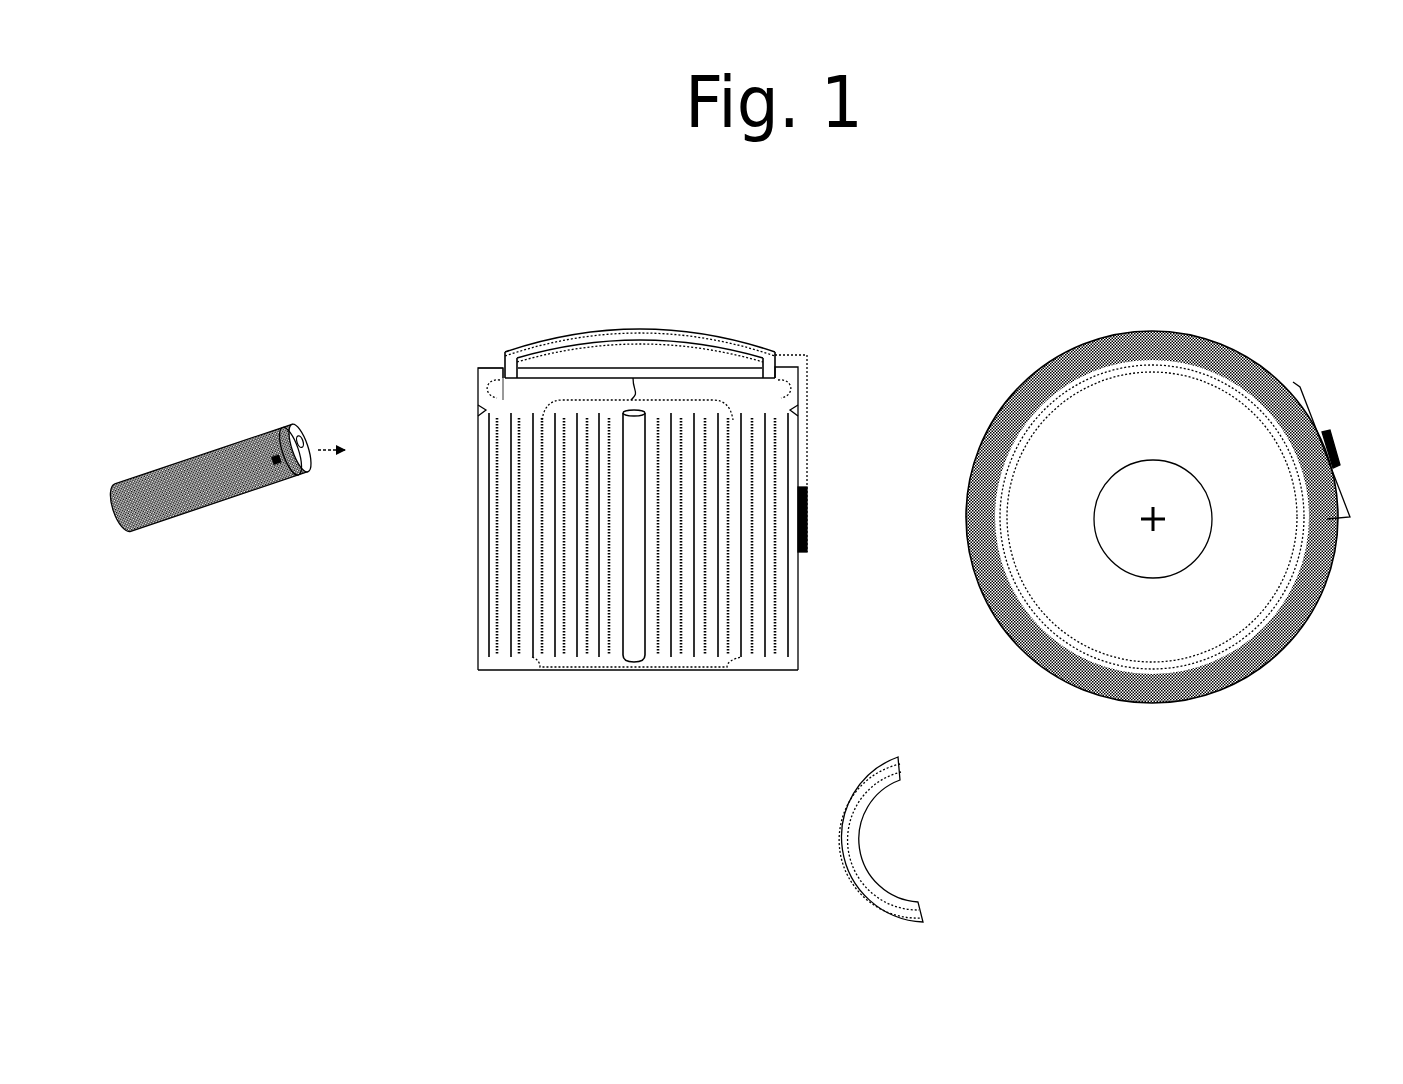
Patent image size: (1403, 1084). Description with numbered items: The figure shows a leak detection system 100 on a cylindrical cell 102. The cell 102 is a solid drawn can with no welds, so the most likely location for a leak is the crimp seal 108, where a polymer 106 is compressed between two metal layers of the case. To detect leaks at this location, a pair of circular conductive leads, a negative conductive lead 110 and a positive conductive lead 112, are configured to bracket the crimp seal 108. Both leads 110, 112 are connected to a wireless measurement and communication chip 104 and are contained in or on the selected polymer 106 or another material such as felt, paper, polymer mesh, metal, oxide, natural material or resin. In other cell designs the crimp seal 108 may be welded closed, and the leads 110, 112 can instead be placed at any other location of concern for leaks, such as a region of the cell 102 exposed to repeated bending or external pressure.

The leak detection system 100 is at (1185, 178).
The cell 102 is at (540, 335).
The wireless measurement and communication chip 104 is at (277, 457).
The polymer 106 is at (850, 838).
The crimp seal 108 is at (495, 396).
The negative conductive lead 110 is at (1308, 600).
The positive conductive lead 112 is at (1237, 642).